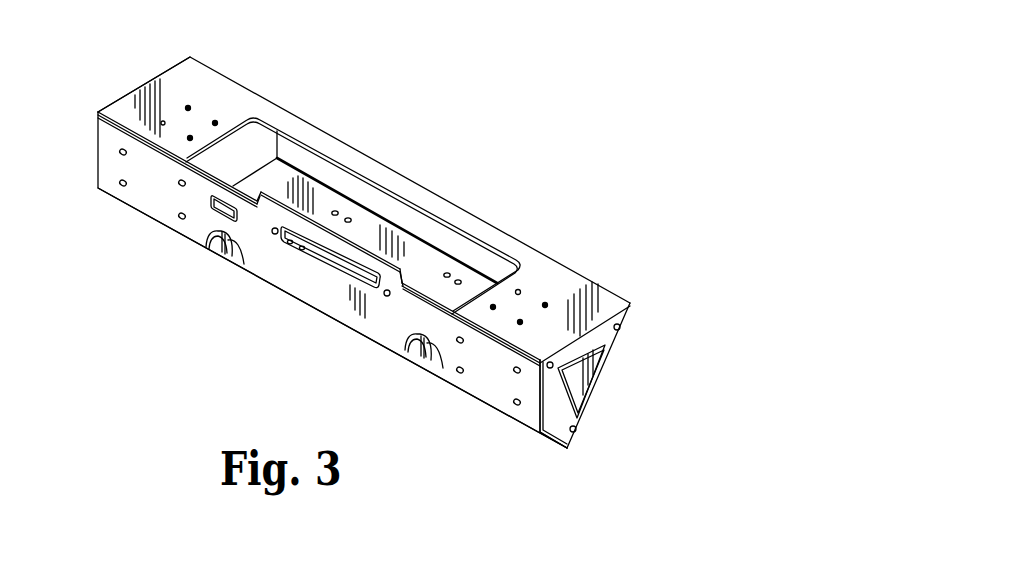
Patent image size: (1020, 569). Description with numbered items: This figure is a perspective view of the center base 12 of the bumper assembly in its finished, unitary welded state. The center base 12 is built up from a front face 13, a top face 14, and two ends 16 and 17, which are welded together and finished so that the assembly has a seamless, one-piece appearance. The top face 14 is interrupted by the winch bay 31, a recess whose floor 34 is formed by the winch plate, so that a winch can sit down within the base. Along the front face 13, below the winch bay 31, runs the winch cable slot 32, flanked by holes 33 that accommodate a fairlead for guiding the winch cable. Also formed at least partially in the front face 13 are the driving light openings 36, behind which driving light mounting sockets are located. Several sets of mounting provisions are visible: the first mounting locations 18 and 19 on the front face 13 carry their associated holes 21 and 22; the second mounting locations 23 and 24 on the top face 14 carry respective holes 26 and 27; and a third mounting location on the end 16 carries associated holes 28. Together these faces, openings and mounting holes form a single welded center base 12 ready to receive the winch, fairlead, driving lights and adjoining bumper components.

The center base 12 is at (650, 243).
The front face 13 is at (318, 292).
The top face 14 is at (530, 273).
The end 16 is at (609, 395).
The end 17 is at (116, 84).
The first mounting location 18 is at (489, 372).
The first mounting location 19 is at (150, 185).
The holes 21 is at (516, 373).
The holes 22 is at (179, 182).
The second mounting location 23 is at (512, 302).
The second mounting location 24 is at (196, 120).
The holes 26 is at (192, 136).
The holes 27 is at (521, 291).
The holes 28 is at (553, 365).
The winch bay 31 is at (336, 178).
The winch cable slot 32 is at (325, 257).
The holes 33 is at (273, 233).
The winch bay floor 34 is at (412, 252).
The driving light openings 36 is at (204, 257).